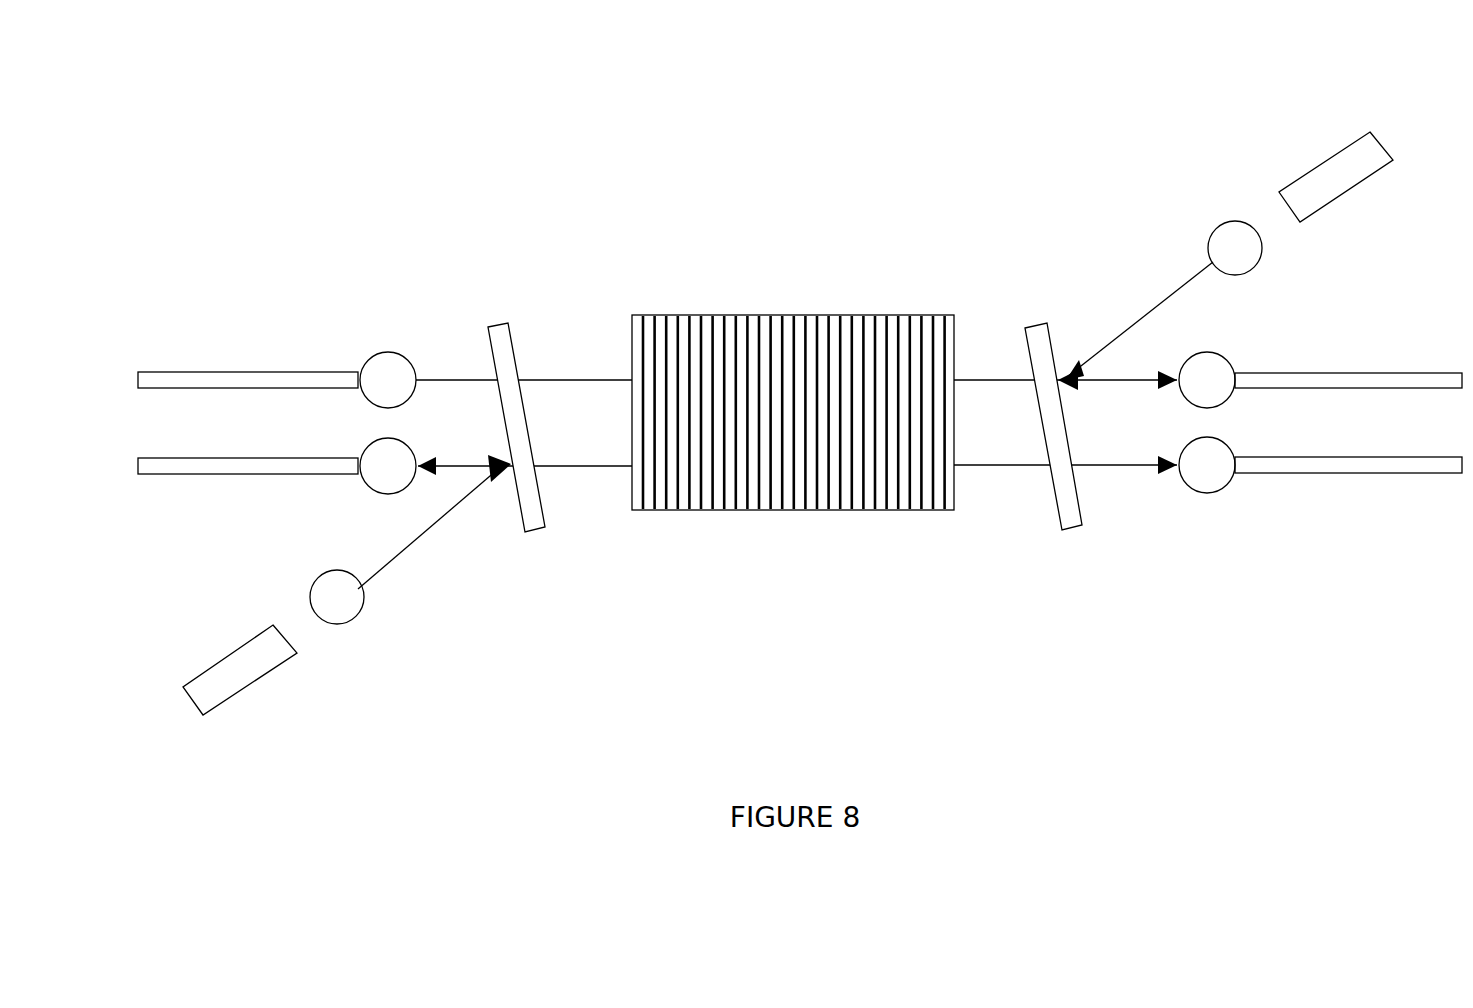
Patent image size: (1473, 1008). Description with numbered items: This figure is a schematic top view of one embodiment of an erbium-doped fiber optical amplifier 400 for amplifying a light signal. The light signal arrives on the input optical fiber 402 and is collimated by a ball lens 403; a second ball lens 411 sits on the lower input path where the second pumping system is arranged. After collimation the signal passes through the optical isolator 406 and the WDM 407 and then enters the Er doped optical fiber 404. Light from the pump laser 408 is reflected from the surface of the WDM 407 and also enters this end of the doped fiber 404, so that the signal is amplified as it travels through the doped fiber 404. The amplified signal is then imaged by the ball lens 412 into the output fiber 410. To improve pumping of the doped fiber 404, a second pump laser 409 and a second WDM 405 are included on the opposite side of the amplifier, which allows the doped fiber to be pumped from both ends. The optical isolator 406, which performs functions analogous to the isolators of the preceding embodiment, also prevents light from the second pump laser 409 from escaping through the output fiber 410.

The optical amplifier 400 is at (252, 101).
The optical fiber 402 is at (235, 383).
The ball lens 403 is at (400, 377).
The Er doped optical fiber 404 is at (272, 470).
The WDM 405 is at (500, 342).
The optical isolator 406 is at (693, 501).
The WDM 407 is at (1053, 513).
The pump laser 408 is at (1358, 150).
The second pump laser 409 is at (253, 670).
The output fiber 410 is at (1348, 467).
The coupler 411 is at (388, 485).
The ball lens 412 is at (1212, 445).